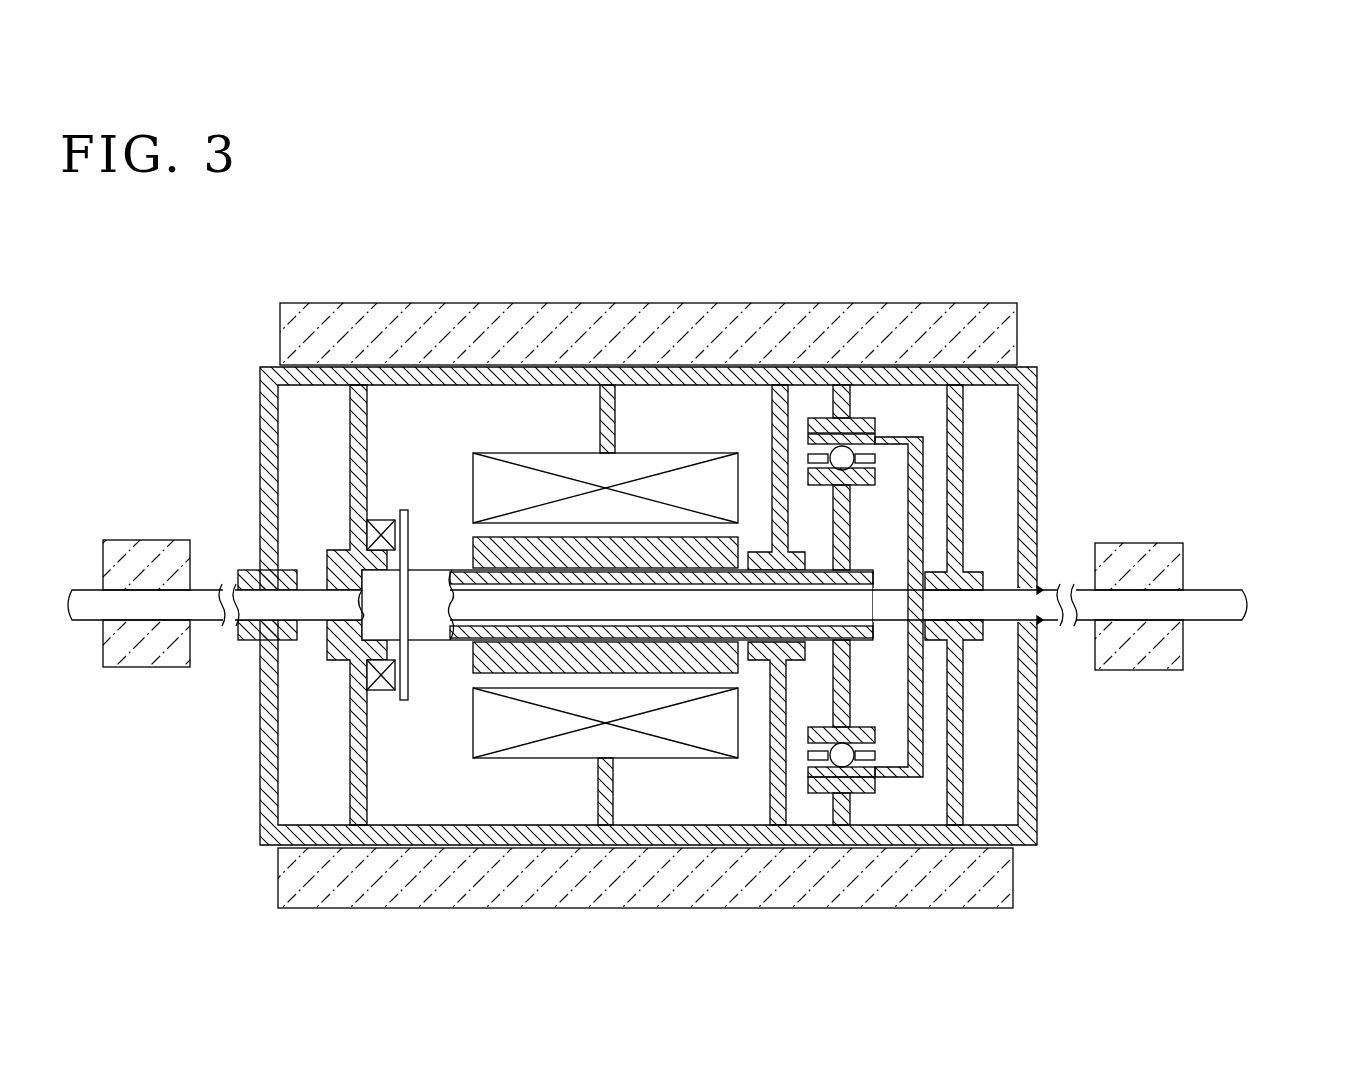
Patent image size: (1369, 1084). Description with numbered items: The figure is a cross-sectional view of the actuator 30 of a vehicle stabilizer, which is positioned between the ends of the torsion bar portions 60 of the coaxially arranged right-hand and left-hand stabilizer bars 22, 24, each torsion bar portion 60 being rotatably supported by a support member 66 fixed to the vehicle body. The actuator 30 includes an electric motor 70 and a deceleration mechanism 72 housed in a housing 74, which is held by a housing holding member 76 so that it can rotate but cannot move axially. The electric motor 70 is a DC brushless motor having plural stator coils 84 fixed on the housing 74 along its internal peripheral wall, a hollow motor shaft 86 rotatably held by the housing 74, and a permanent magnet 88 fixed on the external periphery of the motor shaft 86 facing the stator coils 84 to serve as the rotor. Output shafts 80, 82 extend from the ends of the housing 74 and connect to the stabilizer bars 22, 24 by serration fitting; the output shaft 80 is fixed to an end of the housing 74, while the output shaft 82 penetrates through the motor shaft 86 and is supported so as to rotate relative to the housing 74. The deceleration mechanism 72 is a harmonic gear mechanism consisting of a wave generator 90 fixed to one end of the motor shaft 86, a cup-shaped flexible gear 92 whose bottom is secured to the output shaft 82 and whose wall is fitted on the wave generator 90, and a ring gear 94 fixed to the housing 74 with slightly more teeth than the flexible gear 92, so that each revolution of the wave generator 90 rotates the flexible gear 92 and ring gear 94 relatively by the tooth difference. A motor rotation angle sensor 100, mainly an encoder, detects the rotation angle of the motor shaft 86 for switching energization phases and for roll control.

The actuator 30 is at (614, 272).
The housing holding member 76 is at (388, 315).
The housing 74 is at (318, 380).
The electric motor 70 is at (676, 403).
The stator coils 84 is at (561, 460).
The permanent magnet 88 is at (527, 552).
The motor shaft 86 is at (457, 576).
The motor rotation angle sensor 100 is at (386, 505).
The ring gear 94 is at (822, 418).
The wave generator 90 is at (843, 522).
The flexible gear 92 is at (925, 447).
The deceleration mechanism 72 is at (900, 388).
The output shaft 82 is at (257, 615).
The torsion bar portion 60 is at (697, 601).
The left-hand stabilizer bar 24 is at (79, 566).
The right-hand stabilizer bar 22 is at (1229, 650).
The support member 66 is at (122, 652).
The output shaft 80 is at (1047, 614).